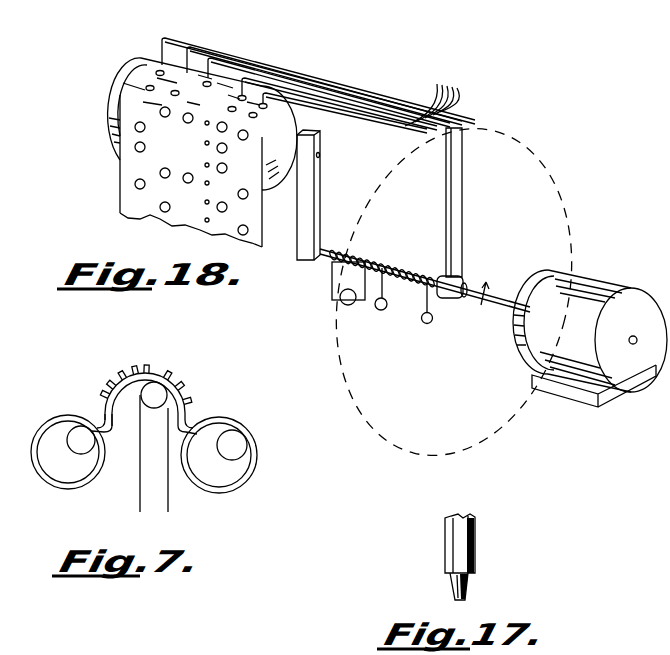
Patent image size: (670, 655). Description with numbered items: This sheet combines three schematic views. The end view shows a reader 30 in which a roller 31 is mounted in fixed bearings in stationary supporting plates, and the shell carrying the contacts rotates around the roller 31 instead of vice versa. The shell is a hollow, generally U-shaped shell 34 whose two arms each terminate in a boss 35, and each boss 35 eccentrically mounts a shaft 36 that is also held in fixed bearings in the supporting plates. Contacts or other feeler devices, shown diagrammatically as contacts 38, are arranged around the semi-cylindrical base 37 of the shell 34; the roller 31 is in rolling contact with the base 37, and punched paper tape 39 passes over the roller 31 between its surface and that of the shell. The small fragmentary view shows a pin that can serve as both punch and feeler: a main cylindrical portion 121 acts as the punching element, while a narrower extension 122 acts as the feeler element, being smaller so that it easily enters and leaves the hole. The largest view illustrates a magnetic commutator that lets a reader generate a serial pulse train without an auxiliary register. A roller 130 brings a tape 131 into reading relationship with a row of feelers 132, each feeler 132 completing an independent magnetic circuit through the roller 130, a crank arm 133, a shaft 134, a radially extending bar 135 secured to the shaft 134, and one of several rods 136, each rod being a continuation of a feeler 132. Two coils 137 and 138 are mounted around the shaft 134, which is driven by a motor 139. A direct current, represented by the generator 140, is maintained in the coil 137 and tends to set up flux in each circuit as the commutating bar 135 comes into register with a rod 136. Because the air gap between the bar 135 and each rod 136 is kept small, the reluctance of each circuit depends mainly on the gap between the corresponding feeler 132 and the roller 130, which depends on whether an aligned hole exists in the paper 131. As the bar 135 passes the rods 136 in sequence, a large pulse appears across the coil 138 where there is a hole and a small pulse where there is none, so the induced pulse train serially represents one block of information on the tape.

In FIG. 18, the roller 130 is at (118, 73).
In FIG. 18, the tape 131 is at (128, 183).
In FIG. 18, the feelers 132 is at (172, 42).
In FIG. 18, the crank arm 133 is at (302, 230).
In FIG. 18, the shaft 134 is at (377, 308).
In FIG. 18, the radially extending bar 135 is at (452, 214).
In FIG. 18, the rods 136 is at (434, 96).
In FIG. 18, the coil 137 is at (352, 258).
In FIG. 18, the coil 138 is at (403, 268).
In FIG. 18, the motor 139 is at (580, 281).
In FIG. 18, the generator 140 is at (348, 306).
In FIG. 7, the reader 30 is at (142, 414).
In FIG. 7, the roller 31 is at (155, 404).
In FIG. 7, the shell 34 is at (112, 425).
In FIG. 7, the boss 35 is at (42, 422).
In FIG. 7, the shaft 36 is at (75, 437).
In FIG. 7, the base 37 is at (126, 378).
In FIG. 7, the contacts 38 is at (143, 362).
In FIG. 7, the punched paper tape 39 is at (139, 495).
In FIG. 17, the main cylindrical portion 121 is at (472, 544).
In FIG. 17, the narrower extension 122 is at (453, 587).